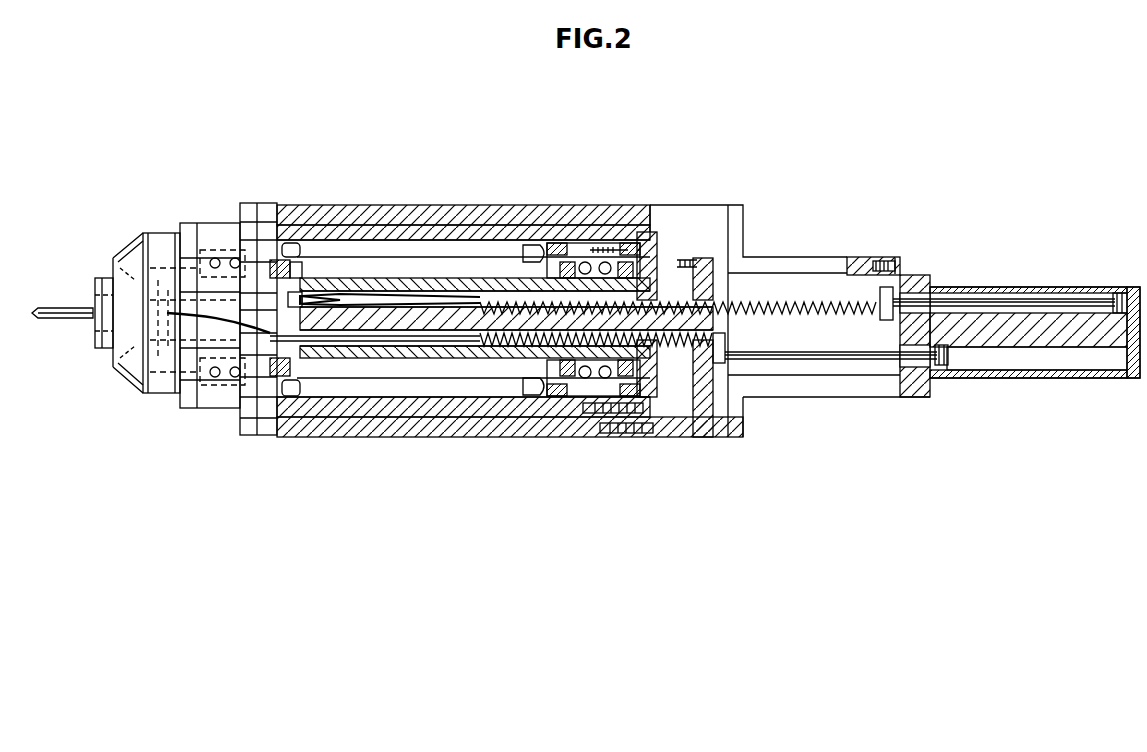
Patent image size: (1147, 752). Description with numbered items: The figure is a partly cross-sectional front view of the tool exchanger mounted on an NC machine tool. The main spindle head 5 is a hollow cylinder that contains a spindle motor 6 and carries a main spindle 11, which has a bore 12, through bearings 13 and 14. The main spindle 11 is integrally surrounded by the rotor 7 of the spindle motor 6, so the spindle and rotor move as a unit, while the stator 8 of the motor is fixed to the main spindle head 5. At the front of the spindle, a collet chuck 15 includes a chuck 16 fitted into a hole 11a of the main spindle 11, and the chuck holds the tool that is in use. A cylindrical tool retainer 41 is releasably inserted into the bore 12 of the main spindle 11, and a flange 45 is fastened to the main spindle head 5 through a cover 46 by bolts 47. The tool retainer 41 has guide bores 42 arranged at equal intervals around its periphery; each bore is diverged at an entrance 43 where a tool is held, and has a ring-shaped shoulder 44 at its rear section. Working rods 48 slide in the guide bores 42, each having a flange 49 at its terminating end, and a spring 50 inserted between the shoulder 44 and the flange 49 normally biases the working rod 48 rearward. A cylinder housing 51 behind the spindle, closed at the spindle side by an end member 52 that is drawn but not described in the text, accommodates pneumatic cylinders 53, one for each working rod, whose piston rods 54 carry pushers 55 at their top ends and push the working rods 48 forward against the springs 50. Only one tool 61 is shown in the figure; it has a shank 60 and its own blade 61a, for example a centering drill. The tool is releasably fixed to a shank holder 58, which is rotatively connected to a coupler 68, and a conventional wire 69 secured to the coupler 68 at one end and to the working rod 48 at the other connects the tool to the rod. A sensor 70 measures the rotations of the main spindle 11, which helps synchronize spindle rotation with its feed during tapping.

The main spindle head 5 is at (470, 215).
The spindle motor 6 is at (490, 248).
The rotor 7 is at (412, 362).
The stator 8 is at (397, 245).
The main spindle 11 is at (460, 397).
The hole of the main spindle 11a is at (120, 362).
The bore 12 is at (327, 398).
The bearing 13 is at (220, 223).
The bearing 14 is at (608, 230).
The collet chuck 15 is at (88, 285).
The chuck 16 is at (130, 283).
The tool retainer 41 is at (515, 380).
The guide bore 42 is at (365, 240).
The entrance 43 is at (328, 262).
The ring-shaped shoulder 44 is at (527, 250).
The flange 45 is at (705, 415).
The cover 46 is at (655, 245).
The bolt 47 is at (737, 262).
The working rod 48 is at (437, 245).
The flange 49 is at (880, 297).
The spring 50 is at (797, 300).
The cylinder housing 51 is at (1030, 276).
The end plate 52 is at (880, 257).
The pneumatic cylinder 53 is at (1080, 300).
The piston rod 54 is at (960, 300).
The pusher 55 is at (890, 317).
The shank holder 58 is at (292, 262).
The shank 60 is at (256, 290).
The tool 61 is at (60, 305).
The blade 61a is at (52, 318).
The coupler 68 is at (303, 290).
The wire 69 is at (403, 299).
The sensor 70 is at (648, 397).